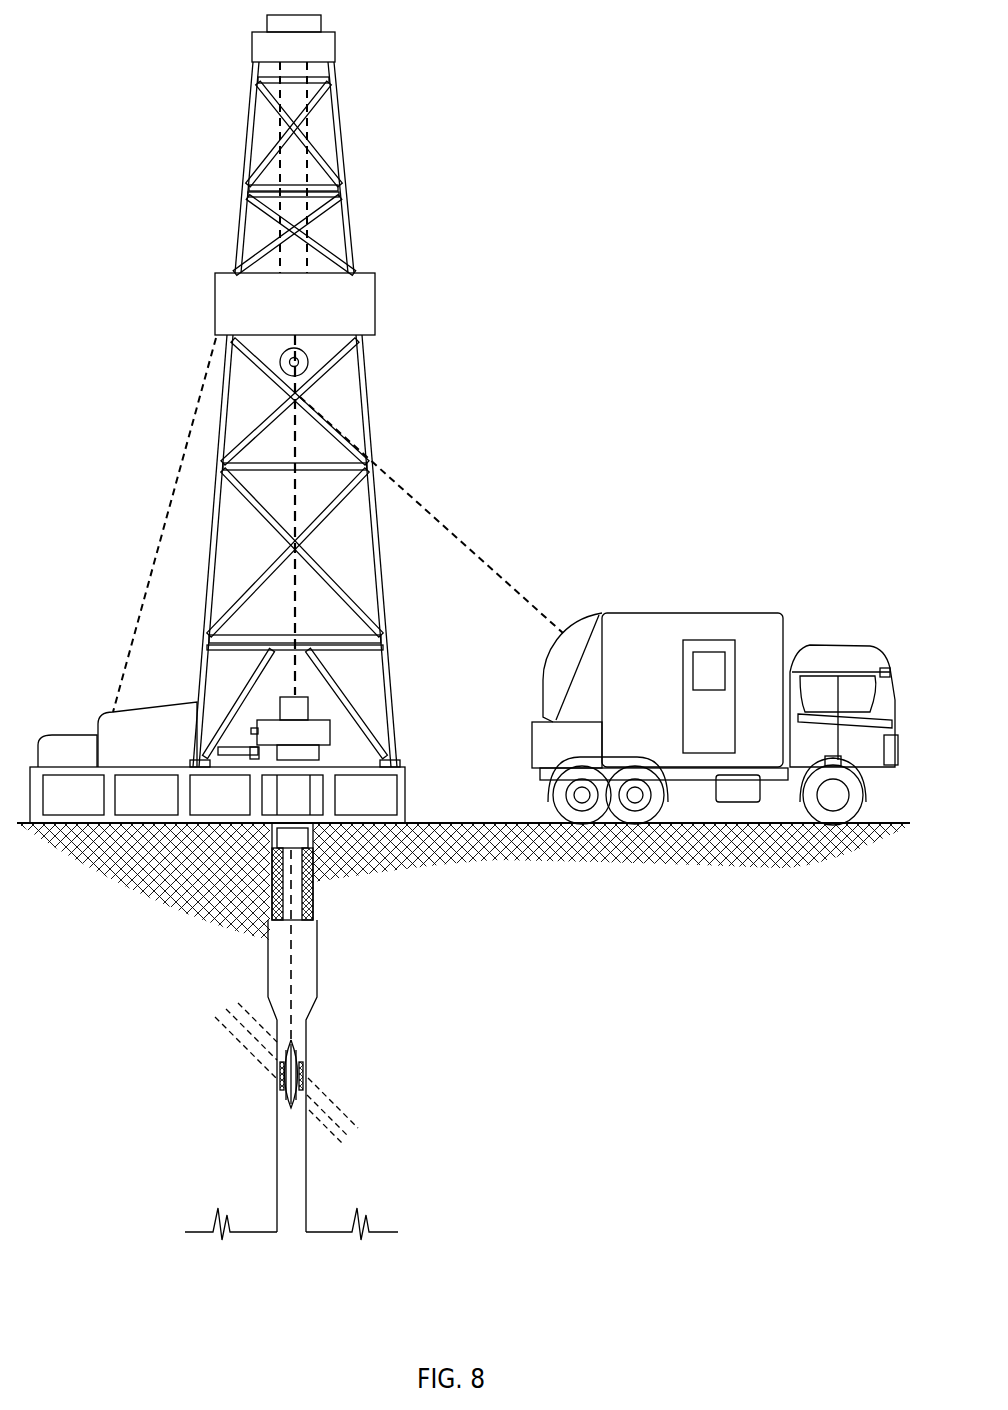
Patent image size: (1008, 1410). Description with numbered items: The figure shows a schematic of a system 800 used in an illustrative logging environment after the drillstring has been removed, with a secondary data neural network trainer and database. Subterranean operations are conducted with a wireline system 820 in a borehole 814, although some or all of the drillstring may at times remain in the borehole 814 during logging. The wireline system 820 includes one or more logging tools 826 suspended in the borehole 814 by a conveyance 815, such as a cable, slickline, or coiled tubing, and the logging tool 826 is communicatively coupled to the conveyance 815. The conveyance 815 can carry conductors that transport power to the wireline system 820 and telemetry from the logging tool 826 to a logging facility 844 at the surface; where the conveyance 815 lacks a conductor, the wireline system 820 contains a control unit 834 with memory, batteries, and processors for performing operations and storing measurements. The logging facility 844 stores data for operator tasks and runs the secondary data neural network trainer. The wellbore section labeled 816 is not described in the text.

The system 800 is at (544, 408).
The borehole 814 is at (277, 1177).
The conveyance 815 is at (298, 909).
The wellbore 816 is at (305, 992).
The wireline system 820 is at (291, 1068).
The logging tool 826 is at (284, 1083).
The control unit 834 is at (322, 718).
The logging facility 844 is at (682, 612).